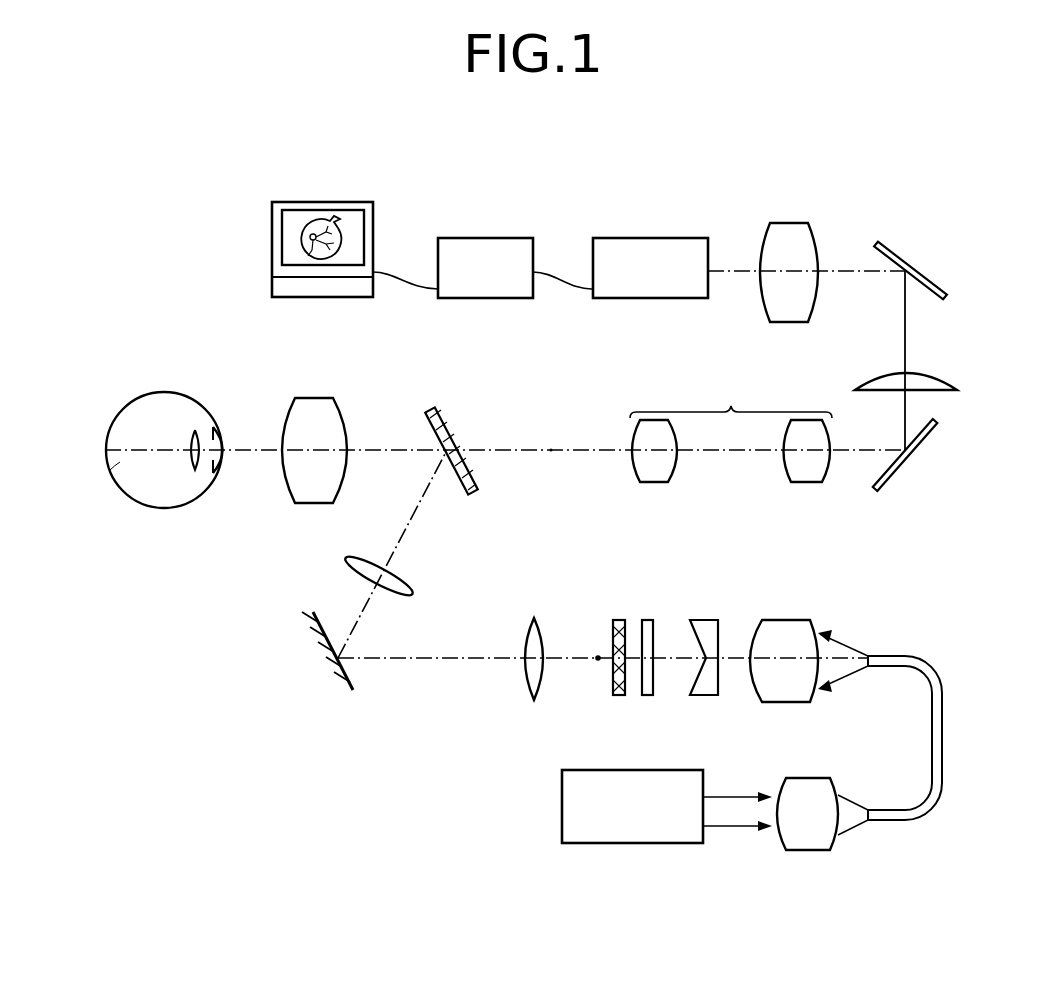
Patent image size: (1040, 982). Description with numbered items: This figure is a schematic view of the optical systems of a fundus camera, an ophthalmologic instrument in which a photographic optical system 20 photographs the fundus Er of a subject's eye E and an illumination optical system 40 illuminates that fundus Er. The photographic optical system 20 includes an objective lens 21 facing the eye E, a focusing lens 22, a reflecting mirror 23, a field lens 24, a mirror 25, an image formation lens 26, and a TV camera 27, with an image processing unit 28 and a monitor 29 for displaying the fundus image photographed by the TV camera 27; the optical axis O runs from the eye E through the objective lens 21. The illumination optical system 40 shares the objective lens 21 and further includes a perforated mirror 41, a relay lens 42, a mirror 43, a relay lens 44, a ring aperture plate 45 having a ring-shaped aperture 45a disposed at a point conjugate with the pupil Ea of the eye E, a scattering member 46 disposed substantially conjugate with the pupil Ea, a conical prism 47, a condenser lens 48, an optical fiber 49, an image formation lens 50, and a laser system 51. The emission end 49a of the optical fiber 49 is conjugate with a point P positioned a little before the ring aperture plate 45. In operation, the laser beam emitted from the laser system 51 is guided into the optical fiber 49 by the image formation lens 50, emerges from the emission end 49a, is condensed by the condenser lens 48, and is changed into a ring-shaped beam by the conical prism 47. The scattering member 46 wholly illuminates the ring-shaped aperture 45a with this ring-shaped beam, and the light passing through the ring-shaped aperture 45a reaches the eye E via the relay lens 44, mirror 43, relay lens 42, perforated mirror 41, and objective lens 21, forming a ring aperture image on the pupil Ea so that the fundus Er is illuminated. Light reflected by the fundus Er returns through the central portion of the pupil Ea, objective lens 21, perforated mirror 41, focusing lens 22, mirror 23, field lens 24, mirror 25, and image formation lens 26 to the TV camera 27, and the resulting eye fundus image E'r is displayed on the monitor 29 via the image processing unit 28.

The subject's eye E is at (164, 413).
The fundus Er is at (120, 467).
The pupil Ea is at (226, 458).
The eye fundus image E'r is at (317, 201).
The optical axis O is at (553, 450).
The point P is at (597, 663).
The photographic optical system 20 is at (732, 500).
The objective lens 21 is at (334, 398).
The focusing lens 22 is at (731, 430).
The reflecting mirror 23 is at (937, 435).
The field lens 24 is at (947, 380).
The mirror 25 is at (938, 285).
The image formation lens 26 is at (772, 223).
The TV camera 27 is at (665, 238).
The image processing unit 28 is at (490, 238).
The monitor 29 is at (355, 220).
The illumination optical system 40 is at (700, 710).
The perforated mirror 41 is at (442, 418).
The relay lens 42 is at (398, 578).
The mirror 43 is at (322, 652).
The relay lens 44 is at (527, 630).
The ring aperture plate 45 is at (618, 696).
The ring-shaped aperture 45a is at (617, 628).
The scattering member 46 is at (662, 605).
The conical prism 47 is at (718, 624).
The condenser lens 48 is at (800, 620).
The optical fiber 49 is at (943, 690).
The emission end 49a is at (875, 655).
The image formation lens 50 is at (818, 850).
The laser system 51 is at (698, 845).